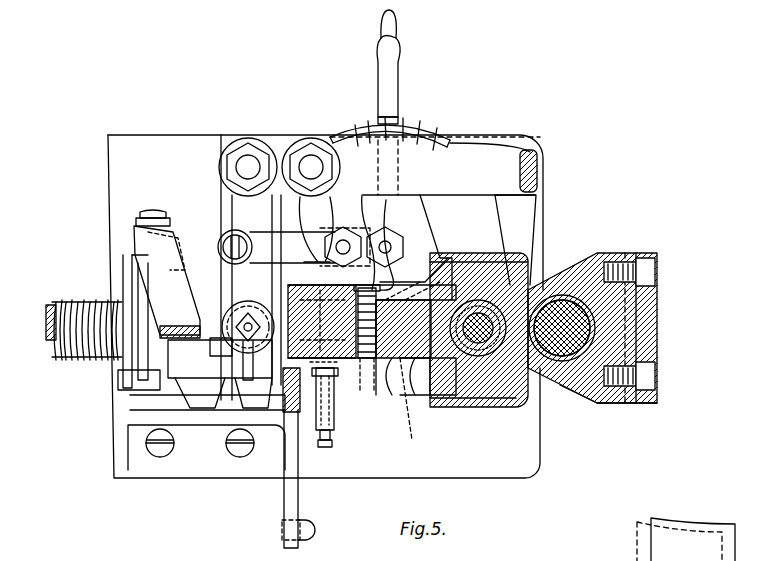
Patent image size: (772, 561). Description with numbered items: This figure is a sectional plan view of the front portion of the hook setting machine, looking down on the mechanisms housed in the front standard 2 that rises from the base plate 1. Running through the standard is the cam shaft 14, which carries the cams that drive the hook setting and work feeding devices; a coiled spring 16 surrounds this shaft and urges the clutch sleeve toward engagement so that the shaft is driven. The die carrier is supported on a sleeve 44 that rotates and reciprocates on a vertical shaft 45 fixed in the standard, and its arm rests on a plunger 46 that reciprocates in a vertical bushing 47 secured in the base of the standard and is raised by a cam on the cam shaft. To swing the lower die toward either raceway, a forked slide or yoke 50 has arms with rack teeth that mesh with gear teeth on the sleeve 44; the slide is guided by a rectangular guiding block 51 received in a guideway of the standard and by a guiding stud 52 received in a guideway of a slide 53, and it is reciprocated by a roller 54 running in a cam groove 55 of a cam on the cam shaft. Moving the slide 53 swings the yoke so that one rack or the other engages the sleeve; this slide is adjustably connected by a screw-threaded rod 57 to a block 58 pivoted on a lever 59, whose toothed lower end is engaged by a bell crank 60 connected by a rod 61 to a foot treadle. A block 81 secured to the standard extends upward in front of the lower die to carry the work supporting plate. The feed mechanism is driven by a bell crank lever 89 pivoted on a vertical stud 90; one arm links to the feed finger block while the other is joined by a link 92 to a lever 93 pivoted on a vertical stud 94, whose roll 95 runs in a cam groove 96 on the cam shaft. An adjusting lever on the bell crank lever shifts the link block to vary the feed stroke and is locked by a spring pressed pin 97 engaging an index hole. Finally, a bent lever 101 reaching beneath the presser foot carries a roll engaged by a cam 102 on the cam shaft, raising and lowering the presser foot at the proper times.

The base plate 1 is at (538, 463).
The front standard 2 is at (613, 402).
The cam shaft 14 is at (48, 340).
The coiled spring 16 is at (62, 308).
The sleeve 44 is at (476, 345).
The vertical shaft 45 is at (487, 360).
The plunger 46 is at (572, 290).
The vertical bushing 47 is at (548, 290).
The forked slide or yoke 50 is at (418, 397).
The rectangular guiding block 51 is at (462, 256).
The guiding stud 52 is at (298, 318).
The slide 53 is at (367, 360).
The roller 54 is at (407, 409).
The cam groove 55 is at (380, 395).
The screw-threaded rod 57 is at (325, 447).
The block 58 is at (334, 406).
The lever 59 is at (247, 444).
The bell crank 60 is at (286, 500).
The rod 61 is at (311, 530).
The block 81 is at (648, 338).
The bell crank lever 89 is at (466, 152).
The vertical stud 90 is at (311, 163).
The link 92 is at (255, 238).
The lever 93 is at (226, 196).
The vertical stud 94 is at (248, 163).
The roll 95 is at (222, 358).
The cam groove 96 is at (258, 388).
The spring pressed pin 97 is at (398, 117).
The bent lever 101 is at (147, 238).
The cam 102 is at (150, 385).